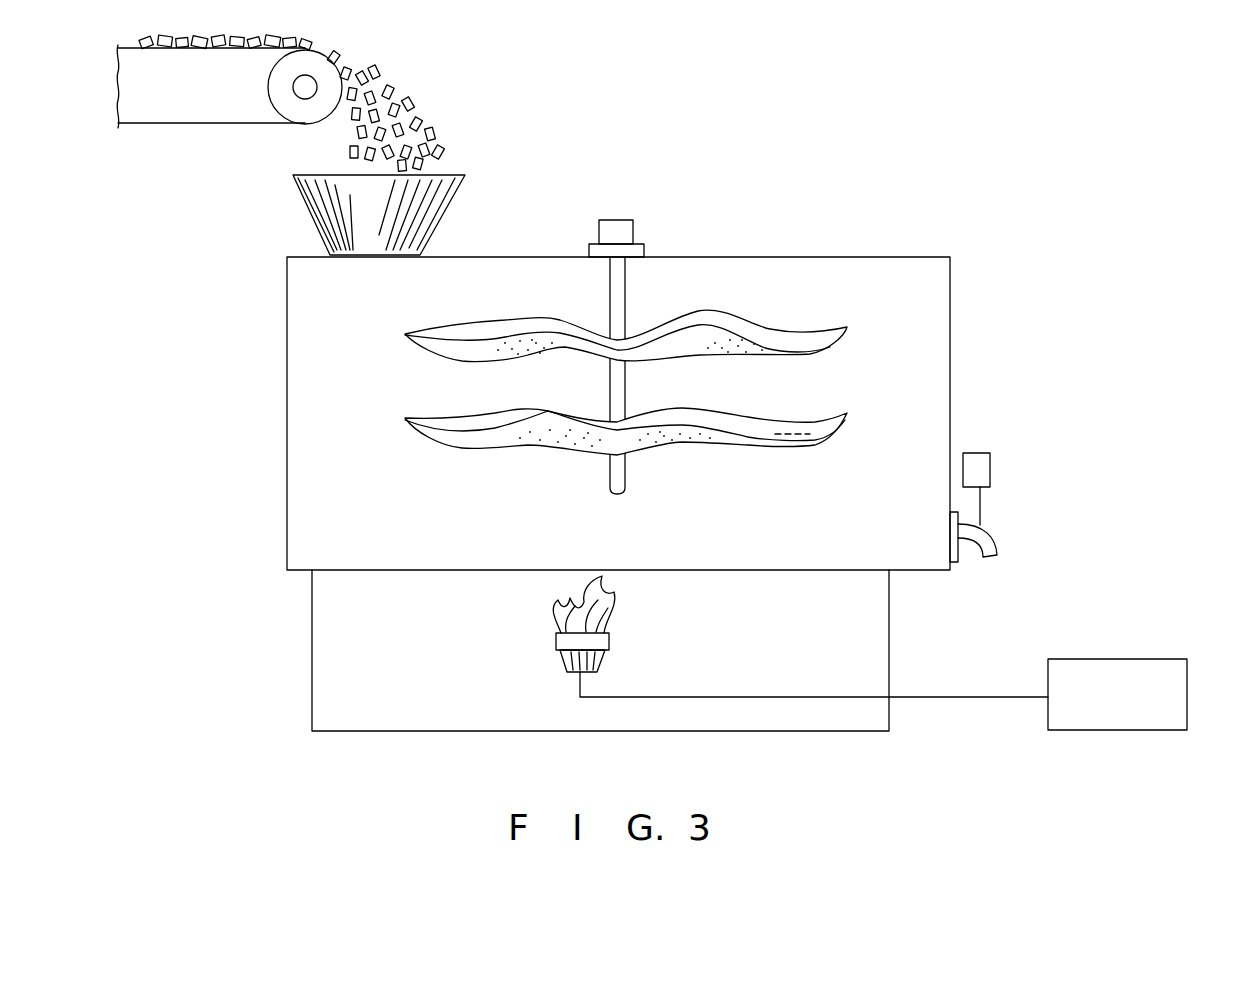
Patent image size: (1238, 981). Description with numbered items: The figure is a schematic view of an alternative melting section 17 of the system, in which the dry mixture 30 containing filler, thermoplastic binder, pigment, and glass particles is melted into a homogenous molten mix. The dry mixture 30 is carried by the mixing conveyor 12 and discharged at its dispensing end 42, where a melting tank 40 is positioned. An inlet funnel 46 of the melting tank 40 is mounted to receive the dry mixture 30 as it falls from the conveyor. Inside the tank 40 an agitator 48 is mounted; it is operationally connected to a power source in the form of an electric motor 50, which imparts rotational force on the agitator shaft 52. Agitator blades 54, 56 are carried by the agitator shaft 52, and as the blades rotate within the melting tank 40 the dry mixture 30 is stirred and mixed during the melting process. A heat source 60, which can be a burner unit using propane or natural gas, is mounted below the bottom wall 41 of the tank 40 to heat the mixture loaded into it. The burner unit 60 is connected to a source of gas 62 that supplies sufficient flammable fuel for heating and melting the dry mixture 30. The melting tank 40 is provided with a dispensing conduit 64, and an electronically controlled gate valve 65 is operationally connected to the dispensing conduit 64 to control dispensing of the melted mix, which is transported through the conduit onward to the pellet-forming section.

The mixing conveyor 12 is at (168, 113).
The alternative melting section 17 is at (744, 101).
The dry mixture 30 is at (372, 68).
The melting tank 40 is at (890, 257).
The bottom wall 41 is at (925, 572).
The dispensing end 42 is at (255, 125).
The inlet funnel 46 is at (455, 195).
The agitator 48 is at (627, 298).
The electric motor 50 is at (633, 232).
The agitator shaft 52 is at (637, 387).
The agitator blade 54 is at (777, 325).
The agitator blade 56 is at (808, 428).
The heat source 60 is at (605, 660).
The source of gas 62 is at (1143, 659).
The dispensing conduit 64 is at (990, 535).
The electronically controlled gate valve 65 is at (990, 478).